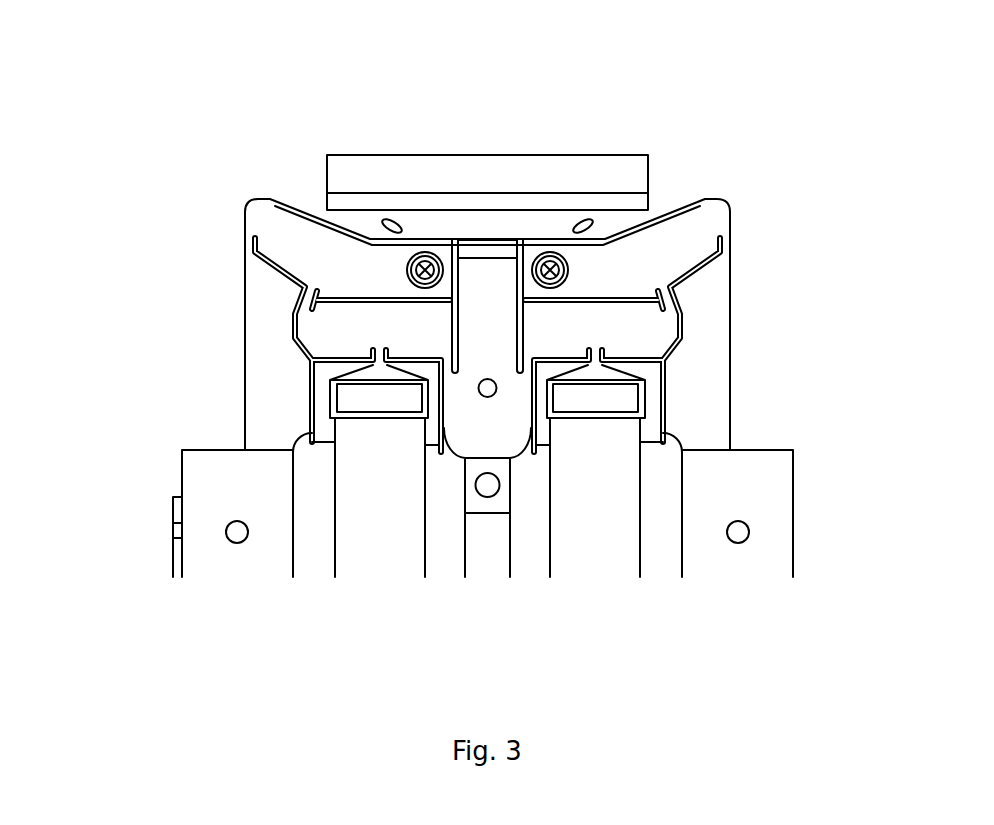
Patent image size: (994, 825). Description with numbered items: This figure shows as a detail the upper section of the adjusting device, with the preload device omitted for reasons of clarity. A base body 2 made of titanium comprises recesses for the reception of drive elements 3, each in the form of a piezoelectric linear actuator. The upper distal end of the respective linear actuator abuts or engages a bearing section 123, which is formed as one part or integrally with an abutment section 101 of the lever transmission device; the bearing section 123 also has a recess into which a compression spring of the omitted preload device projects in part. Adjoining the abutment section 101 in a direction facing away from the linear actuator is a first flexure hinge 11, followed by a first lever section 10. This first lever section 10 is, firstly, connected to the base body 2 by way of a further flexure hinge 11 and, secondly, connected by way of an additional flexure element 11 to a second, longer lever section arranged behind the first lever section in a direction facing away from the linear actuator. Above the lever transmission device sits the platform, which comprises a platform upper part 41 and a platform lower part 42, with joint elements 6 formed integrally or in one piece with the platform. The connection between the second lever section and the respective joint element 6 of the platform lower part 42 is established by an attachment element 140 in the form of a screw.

The base body 2 is at (207, 508).
The drive element 3 is at (377, 528).
The joint element 6 is at (560, 240).
The first lever section 10 is at (308, 243).
The flexure hinge 11 is at (247, 240).
The platform upper part 41 is at (578, 170).
The platform lower part 42 is at (412, 202).
The abutment section 101 is at (637, 392).
The bearing section 123 is at (597, 402).
The attachment element 140 is at (567, 270).